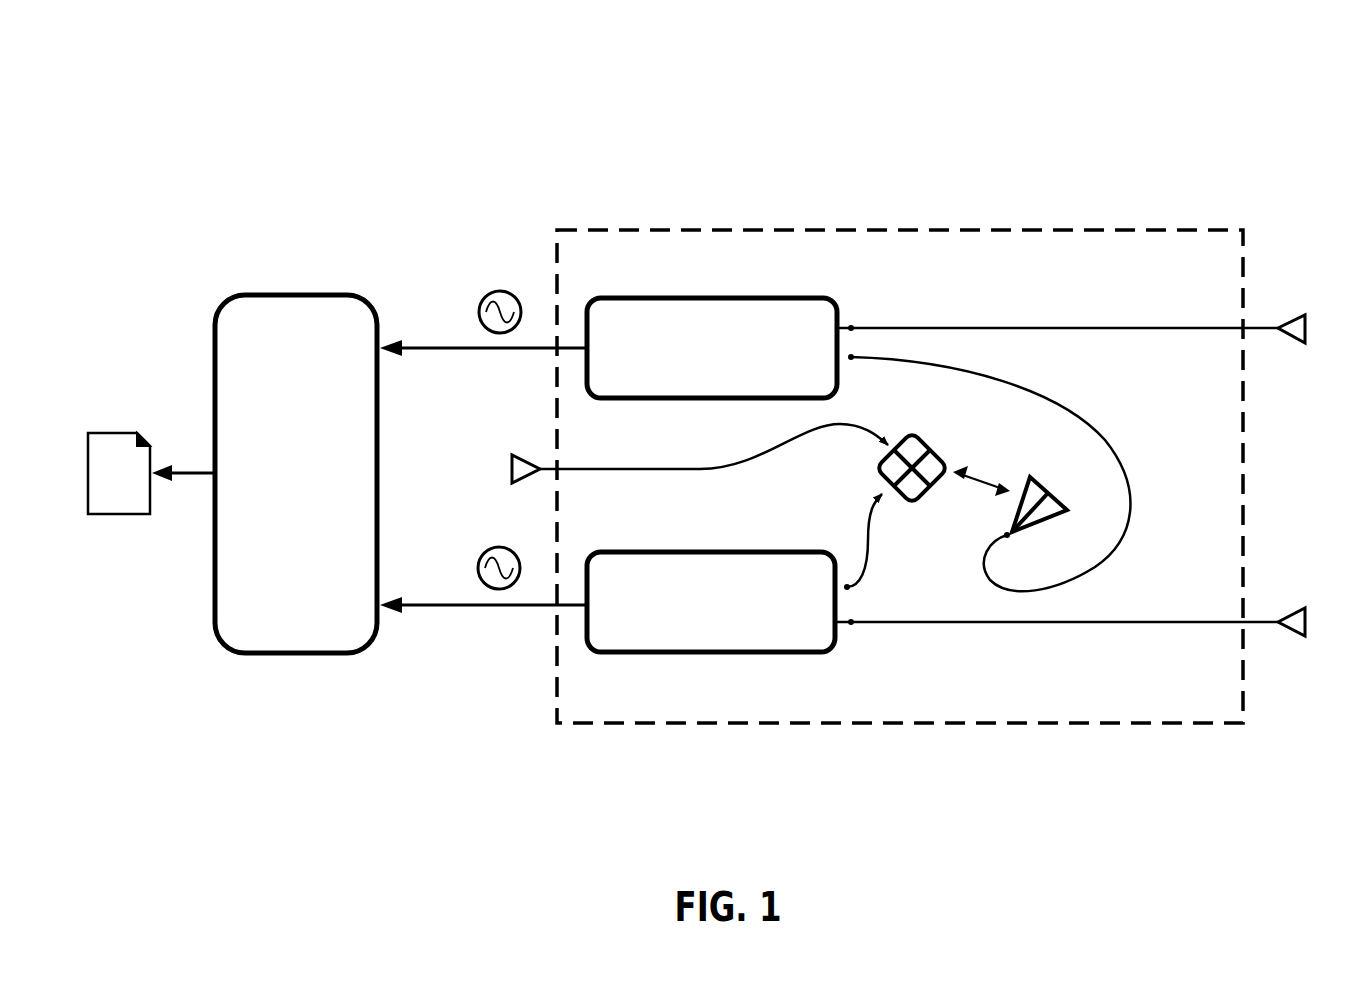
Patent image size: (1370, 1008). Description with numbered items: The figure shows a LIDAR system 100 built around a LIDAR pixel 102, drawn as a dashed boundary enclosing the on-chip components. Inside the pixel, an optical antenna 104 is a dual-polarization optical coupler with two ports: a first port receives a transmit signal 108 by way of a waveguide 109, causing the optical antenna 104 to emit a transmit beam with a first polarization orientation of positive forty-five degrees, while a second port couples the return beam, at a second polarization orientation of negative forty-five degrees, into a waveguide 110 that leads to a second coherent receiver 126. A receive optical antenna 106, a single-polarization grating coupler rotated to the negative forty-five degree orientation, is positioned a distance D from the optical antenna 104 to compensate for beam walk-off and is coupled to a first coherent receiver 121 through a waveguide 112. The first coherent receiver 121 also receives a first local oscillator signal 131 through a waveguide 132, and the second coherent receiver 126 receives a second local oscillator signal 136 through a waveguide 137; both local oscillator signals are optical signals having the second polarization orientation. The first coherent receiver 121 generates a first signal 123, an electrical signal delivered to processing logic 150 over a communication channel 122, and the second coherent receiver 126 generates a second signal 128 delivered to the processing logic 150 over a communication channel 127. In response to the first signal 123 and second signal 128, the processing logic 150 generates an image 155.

The LIDAR system 100 is at (732, 30).
The LIDAR pixel 102 is at (557, 230).
The optical antenna 104 is at (876, 474).
The receive optical antenna 106 is at (1058, 497).
The transmit signal 108 is at (518, 453).
The waveguide 109 is at (718, 470).
The waveguide 110 is at (868, 562).
The waveguide 112 is at (1012, 383).
The first coherent receiver 121 is at (712, 348).
The communication channel 122 is at (482, 350).
The first signal 123 is at (485, 292).
The second coherent receiver 126 is at (711, 602).
The communication channel 127 is at (516, 608).
The second signal 128 is at (485, 548).
The first local oscillator signal 131 is at (1305, 317).
The waveguide 132 is at (940, 328).
The second local oscillator signal 136 is at (1305, 608).
The waveguide 137 is at (990, 623).
The processing logic 150 is at (296, 474).
The image 155 is at (104, 488).